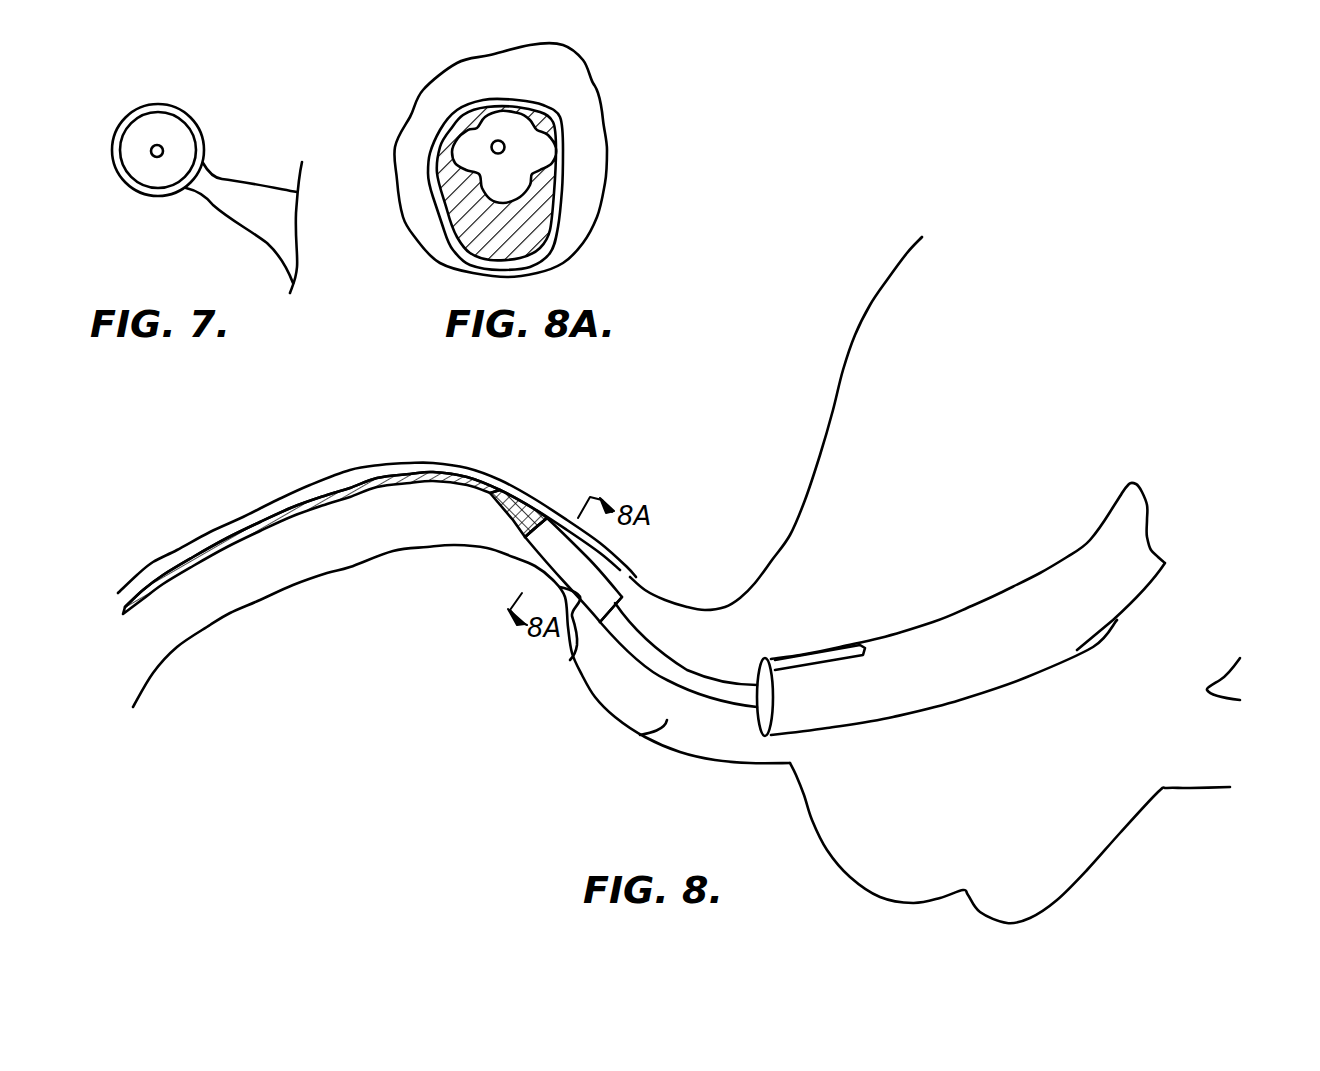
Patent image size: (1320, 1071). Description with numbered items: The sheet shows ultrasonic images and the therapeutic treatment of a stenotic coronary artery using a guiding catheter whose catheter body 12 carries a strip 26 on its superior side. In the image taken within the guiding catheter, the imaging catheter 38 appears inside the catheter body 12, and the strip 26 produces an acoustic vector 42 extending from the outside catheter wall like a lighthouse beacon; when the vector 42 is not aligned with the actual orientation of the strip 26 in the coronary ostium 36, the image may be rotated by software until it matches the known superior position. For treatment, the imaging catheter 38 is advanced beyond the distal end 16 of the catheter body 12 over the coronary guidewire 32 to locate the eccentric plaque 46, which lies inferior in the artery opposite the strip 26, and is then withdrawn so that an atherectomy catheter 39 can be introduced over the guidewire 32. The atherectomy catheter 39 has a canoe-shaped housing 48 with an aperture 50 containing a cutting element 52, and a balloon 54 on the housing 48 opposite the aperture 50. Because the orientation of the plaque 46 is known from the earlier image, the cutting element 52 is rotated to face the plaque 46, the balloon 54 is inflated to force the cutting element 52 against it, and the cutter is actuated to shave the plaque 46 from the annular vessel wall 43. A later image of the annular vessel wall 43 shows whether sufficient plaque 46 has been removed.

In FIG. 7, the catheter body 12 is at (111, 141).
In FIG. 8, the catheter body 12 is at (967, 685).
In FIG. 8, the distal end 16 is at (753, 740).
In FIG. 8, the strip 26 is at (838, 627).
In FIG. 8, the coronary guidewire 32 is at (313, 512).
In FIG. 8, the coronary ostium 36 is at (713, 747).
In FIG. 7, the imaging catheter 38 is at (152, 156).
In FIG. 8, the atherectomy catheter 39 is at (687, 683).
In FIG. 7, the acoustic vector 42 is at (243, 203).
In FIG. 8A, the annular vessel wall 43 is at (563, 175).
In FIG. 8, the annular vessel wall 43 is at (590, 693).
In FIG. 8A, the eccentric plaque 46 is at (534, 222).
In FIG. 8, the canoe-shaped housing 48 is at (535, 538).
In FIG. 8, the aperture 50 is at (547, 557).
In FIG. 8, the cutting element 52 is at (574, 660).
In FIG. 8, the balloon 54 is at (622, 578).